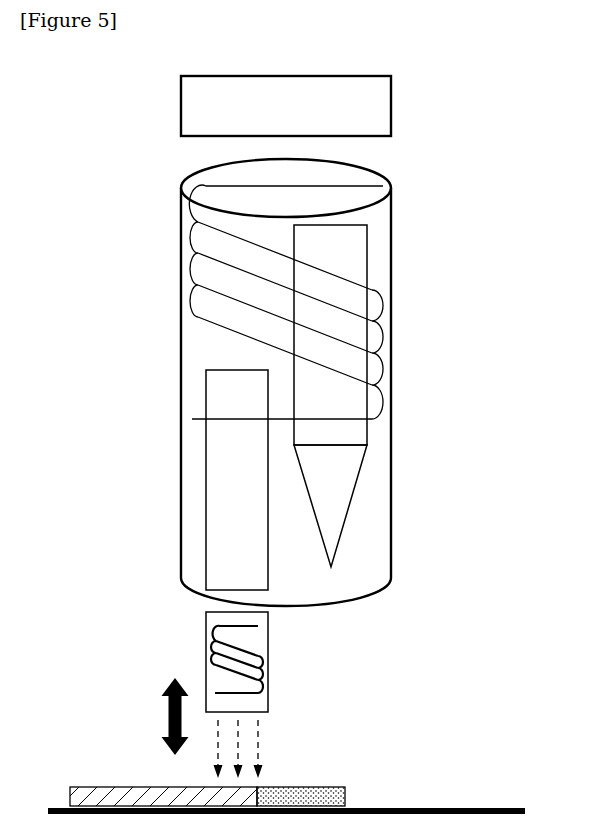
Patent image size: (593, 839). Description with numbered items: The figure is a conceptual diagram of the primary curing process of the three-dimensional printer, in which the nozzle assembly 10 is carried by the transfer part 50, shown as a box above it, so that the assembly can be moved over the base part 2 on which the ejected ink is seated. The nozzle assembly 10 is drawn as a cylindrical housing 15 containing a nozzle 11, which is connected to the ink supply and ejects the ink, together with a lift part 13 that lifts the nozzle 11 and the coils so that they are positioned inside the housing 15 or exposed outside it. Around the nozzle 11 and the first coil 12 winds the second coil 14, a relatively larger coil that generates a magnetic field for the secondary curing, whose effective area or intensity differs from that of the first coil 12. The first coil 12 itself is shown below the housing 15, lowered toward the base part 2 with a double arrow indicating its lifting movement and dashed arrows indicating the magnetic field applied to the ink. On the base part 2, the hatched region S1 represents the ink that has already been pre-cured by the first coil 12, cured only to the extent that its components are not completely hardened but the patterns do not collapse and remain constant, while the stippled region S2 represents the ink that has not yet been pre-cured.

The transfer part 50 is at (181, 104).
The nozzle assembly 10 is at (263, 382).
The housing 15 is at (392, 432).
The second coil 14 is at (385, 293).
The lift part 13 is at (207, 517).
The nozzle 11 is at (352, 508).
The first coil 12 is at (206, 641).
The pre-cured ink S1 is at (93, 787).
The ink which is not pre-cured S2 is at (330, 787).
The base part 2 is at (526, 811).